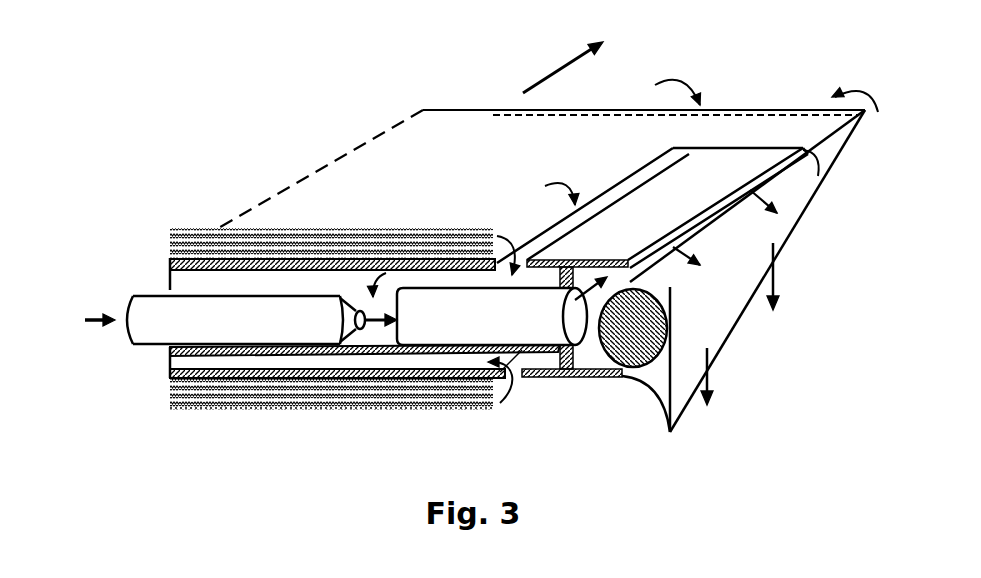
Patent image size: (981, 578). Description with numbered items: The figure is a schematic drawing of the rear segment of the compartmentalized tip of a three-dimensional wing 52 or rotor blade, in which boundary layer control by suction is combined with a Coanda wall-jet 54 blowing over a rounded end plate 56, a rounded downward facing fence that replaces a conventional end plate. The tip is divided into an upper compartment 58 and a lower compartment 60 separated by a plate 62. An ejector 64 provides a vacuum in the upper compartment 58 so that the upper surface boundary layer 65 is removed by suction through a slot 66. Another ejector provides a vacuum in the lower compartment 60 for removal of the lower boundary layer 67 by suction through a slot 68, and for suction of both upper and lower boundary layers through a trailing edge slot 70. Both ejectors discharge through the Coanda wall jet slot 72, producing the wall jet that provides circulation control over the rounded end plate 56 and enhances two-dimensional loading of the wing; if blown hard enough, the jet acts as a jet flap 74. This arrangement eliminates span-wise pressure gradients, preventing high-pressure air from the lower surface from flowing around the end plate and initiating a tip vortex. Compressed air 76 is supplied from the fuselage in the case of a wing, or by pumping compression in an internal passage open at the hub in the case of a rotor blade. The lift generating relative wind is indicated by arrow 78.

The 3-D wing 52 is at (457, 125).
The Coanda wall-jet 54 is at (776, 237).
The rounded end plate 56 is at (727, 298).
The upper compartment 58 is at (168, 275).
The lower compartment 60 is at (440, 360).
The plate 62 is at (170, 350).
The ejector 64 is at (335, 352).
The upper surface boundary layer 65 is at (207, 235).
The slot 66 is at (545, 235).
The lower boundary layer 67 is at (205, 405).
The slot 68 is at (523, 397).
The trailing edge slot 70 is at (745, 108).
The Coanda wall jet slot 72 is at (758, 190).
The jet flap 74 is at (712, 412).
The compressed air 76 is at (55, 292).
The arrow 78 is at (580, 59).